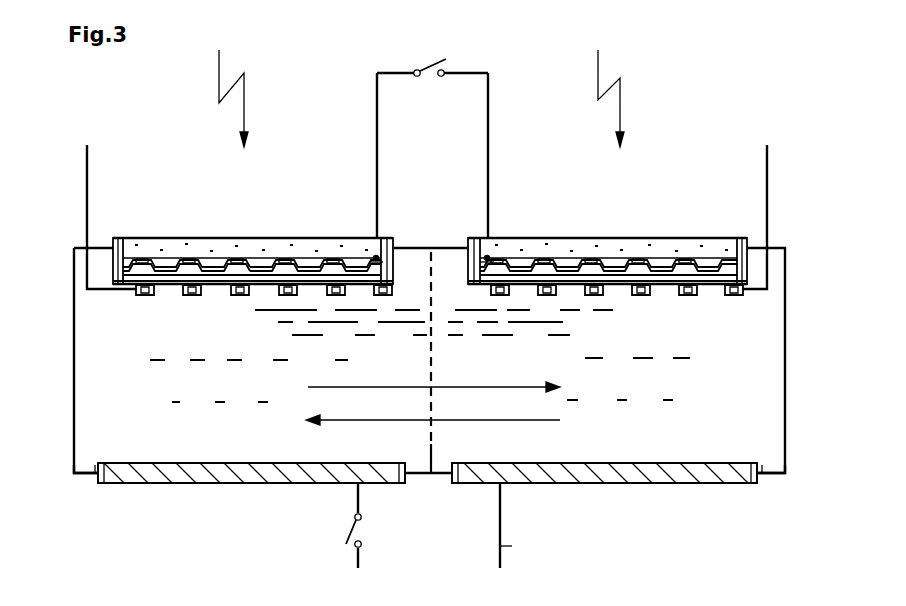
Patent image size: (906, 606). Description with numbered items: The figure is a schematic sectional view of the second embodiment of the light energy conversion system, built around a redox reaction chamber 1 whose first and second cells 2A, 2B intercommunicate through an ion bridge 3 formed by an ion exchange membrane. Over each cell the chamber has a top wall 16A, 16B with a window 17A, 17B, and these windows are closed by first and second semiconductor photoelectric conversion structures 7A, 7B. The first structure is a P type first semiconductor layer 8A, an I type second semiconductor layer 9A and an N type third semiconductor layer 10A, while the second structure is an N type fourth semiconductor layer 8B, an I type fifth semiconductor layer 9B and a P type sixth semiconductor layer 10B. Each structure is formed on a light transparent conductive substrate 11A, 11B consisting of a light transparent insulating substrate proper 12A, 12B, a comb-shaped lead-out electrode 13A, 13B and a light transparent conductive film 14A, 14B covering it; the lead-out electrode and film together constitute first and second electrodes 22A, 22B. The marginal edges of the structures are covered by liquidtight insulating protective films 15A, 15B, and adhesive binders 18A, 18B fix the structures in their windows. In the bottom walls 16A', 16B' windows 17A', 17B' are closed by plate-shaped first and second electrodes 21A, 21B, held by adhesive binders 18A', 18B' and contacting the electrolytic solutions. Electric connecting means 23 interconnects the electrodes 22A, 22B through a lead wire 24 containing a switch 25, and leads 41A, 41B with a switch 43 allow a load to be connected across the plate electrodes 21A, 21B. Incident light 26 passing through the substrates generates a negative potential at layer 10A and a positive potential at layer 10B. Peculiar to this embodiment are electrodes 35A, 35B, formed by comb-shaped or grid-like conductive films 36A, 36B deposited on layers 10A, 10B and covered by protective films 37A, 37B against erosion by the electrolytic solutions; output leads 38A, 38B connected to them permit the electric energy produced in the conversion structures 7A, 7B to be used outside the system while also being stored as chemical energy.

The redox reaction chamber 1 is at (430, 561).
The first cell 2A is at (414, 485).
The second cell 2B is at (437, 485).
The ion bridge 3 is at (432, 446).
The first semiconductor photoelectric conversion structure 7A is at (176, 121).
The second semiconductor photoelectric conversion structure 7B is at (587, 121).
The P type first semiconductor layer 8A is at (129, 238).
The N type fourth semiconductor layer 8B is at (591, 238).
The I type second semiconductor layer 9A is at (139, 238).
The I type fifth semiconductor layer 9B is at (588, 238).
The N type third semiconductor layer 10A is at (153, 238).
The P type sixth semiconductor layer 10B is at (562, 238).
The light transparent conductive substrate 11A is at (322, 121).
The light transparent conductive substrate 11B is at (712, 120).
The light transparent insulating substrate proper 12A is at (260, 238).
The light transparent insulating substrate proper 12B is at (652, 238).
The comb-shaped lead-out electrode 13A is at (280, 238).
The comb-shaped lead-out electrode 13B is at (666, 238).
The light transparent conductive film 14A is at (293, 238).
The light transparent conductive film 14B is at (682, 238).
The liquidtight insulating protective film 15A is at (387, 286).
The liquidtight insulating protective film 15B is at (473, 286).
The top wall 16A is at (414, 244).
The top wall 16B is at (448, 215).
The bottom wall 16A' is at (67, 490).
The bottom wall 16B' is at (791, 495).
The window 17A is at (397, 216).
The window 17B is at (468, 190).
The window 17A' is at (96, 509).
The window 17B' is at (748, 510).
The adhesive binder 18A is at (258, 334).
The adhesive binder 18B is at (603, 334).
The adhesive binder 18A' is at (131, 490).
The adhesive binder 18B' is at (728, 494).
The first electrode 21A is at (205, 483).
The second electrode 21B is at (600, 483).
The first electrode 22A is at (356, 238).
The second electrode 22B is at (518, 238).
The electric connecting means 23 is at (420, 113).
The lead wire 24 is at (377, 80).
The switch 25 is at (432, 63).
The light 26 is at (221, 70).
The electrode 35A is at (193, 295).
The electrode 35B is at (688, 295).
The comb-shaped or grid-like conductive film 36A is at (264, 290).
The comb-shaped or grid-like conductive film 36B is at (617, 290).
The protective film 37A is at (225, 295).
The protective film 37B is at (705, 295).
The output lead 38A is at (87, 147).
The output lead 38B is at (767, 156).
The lead 41A is at (358, 556).
The lead 41B is at (528, 525).
The switch 43 is at (348, 531).